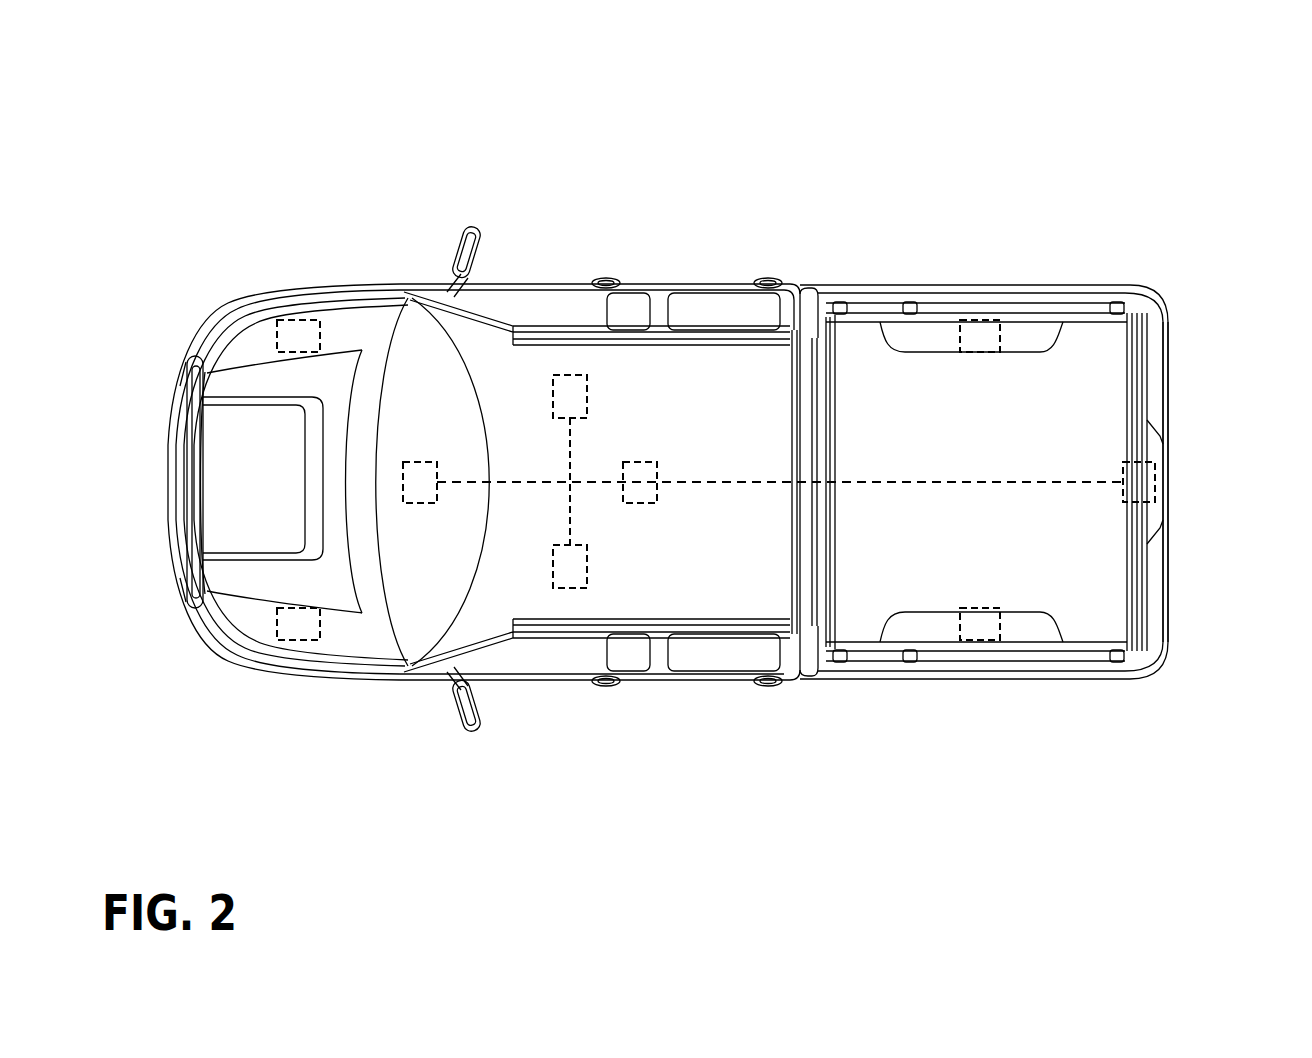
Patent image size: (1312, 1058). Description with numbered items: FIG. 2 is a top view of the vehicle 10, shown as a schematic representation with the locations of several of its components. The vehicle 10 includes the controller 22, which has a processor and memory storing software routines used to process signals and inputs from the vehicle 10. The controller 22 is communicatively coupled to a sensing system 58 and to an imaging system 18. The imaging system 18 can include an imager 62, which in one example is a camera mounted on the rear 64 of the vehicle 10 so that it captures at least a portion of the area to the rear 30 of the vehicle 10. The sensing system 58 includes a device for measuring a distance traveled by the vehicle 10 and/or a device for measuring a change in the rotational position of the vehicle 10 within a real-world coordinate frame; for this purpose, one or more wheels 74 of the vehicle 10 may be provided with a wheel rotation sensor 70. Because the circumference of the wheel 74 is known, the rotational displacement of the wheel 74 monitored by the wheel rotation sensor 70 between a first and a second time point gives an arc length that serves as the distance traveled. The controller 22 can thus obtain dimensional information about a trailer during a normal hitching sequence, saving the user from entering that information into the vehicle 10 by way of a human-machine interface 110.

The vehicle 10 is at (245, 152).
The imaging system 18 is at (568, 590).
The controller 22 is at (568, 374).
The rear of the vehicle 30 is at (1299, 505).
The sensing system 58 is at (641, 464).
The imager 62 is at (1160, 472).
The rear 64 is at (1168, 368).
The wheel rotation sensor 70 is at (293, 333).
The wheel 74 is at (277, 292).
The human-machine interface 110 is at (420, 505).